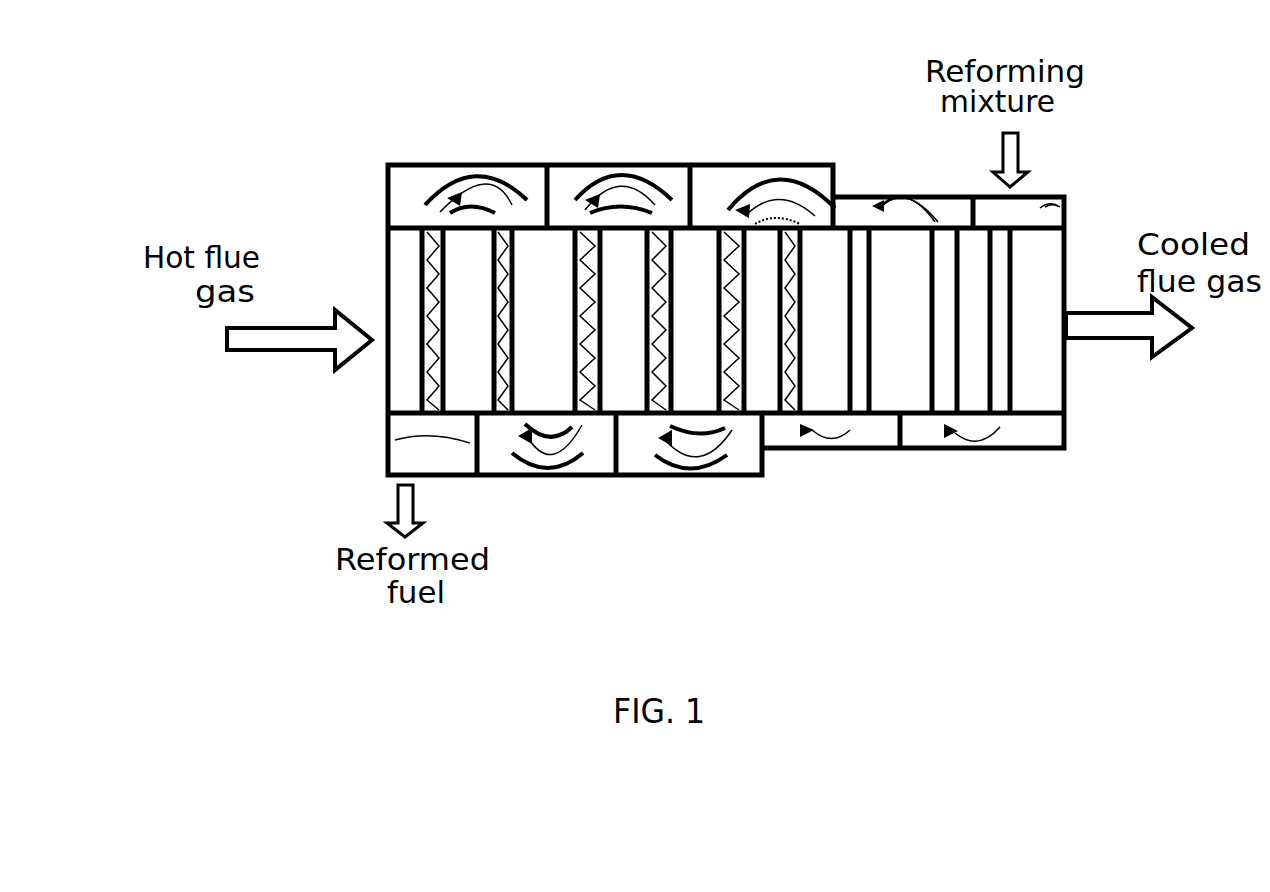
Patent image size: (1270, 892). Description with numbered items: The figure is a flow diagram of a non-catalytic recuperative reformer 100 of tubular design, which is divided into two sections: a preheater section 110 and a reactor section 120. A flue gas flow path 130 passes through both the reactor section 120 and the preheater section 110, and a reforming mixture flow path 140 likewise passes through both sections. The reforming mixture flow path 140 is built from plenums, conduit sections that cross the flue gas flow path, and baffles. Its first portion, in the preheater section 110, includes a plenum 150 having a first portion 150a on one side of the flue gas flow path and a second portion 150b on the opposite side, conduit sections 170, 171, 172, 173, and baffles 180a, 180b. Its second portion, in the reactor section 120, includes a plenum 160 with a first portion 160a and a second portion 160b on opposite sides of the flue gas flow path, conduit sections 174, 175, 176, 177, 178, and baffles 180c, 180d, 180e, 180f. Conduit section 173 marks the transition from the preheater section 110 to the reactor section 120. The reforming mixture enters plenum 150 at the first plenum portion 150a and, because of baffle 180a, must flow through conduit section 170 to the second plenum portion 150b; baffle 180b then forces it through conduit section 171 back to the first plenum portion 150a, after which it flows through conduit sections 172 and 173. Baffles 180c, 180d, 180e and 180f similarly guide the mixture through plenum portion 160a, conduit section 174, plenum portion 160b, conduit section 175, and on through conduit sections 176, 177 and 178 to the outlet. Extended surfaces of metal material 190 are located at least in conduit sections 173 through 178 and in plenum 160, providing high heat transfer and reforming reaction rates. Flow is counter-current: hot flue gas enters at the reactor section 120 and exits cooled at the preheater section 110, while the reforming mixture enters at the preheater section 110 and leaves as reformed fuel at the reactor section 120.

The recuperative reformer 100 is at (1067, 675).
The preheater section 110 is at (893, 145).
The reactor section 120 is at (543, 78).
The flue gas flow path 130 is at (386, 277).
The reforming mixture flow path 140 is at (1043, 197).
The plenum 150 is at (1054, 464).
The first plenum portion 150a is at (1072, 200).
The second plenum portion 150b is at (1061, 434).
The plenum 160 is at (414, 150).
The first plenum portion 160a is at (375, 168).
The second plenum portion 160b is at (394, 425).
The conduit section 170 is at (1000, 404).
The conduit section 171 is at (937, 404).
The conduit section 172 is at (862, 420).
The conduit section 173 is at (792, 404).
The conduit section 174 is at (731, 404).
The conduit section 175 is at (653, 404).
The conduit section 176 is at (584, 402).
The conduit section 177 is at (501, 402).
The conduit section 178 is at (432, 402).
The baffle 180a is at (953, 197).
The baffle 180b is at (898, 428).
The baffle 180c is at (703, 178).
The baffle 180d is at (618, 462).
The baffle 180e is at (569, 165).
The baffle 180f is at (470, 441).
The extended surfaces of metal material 190 is at (652, 163).